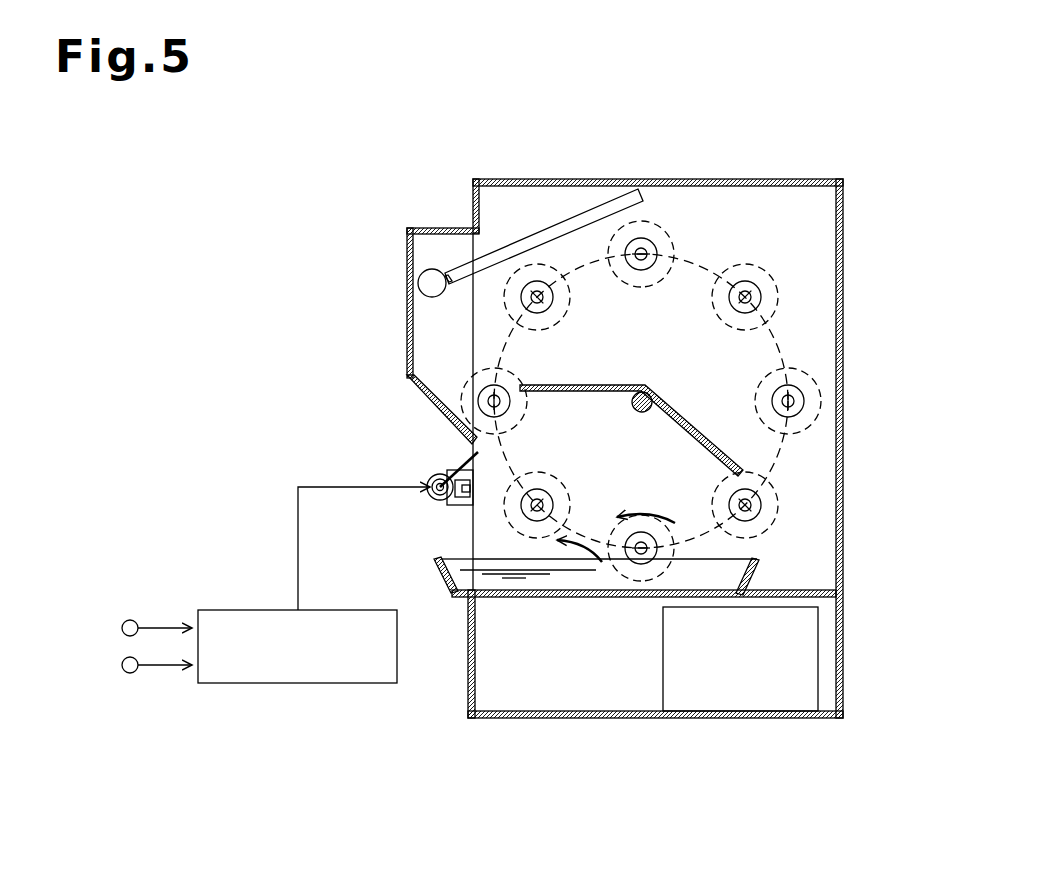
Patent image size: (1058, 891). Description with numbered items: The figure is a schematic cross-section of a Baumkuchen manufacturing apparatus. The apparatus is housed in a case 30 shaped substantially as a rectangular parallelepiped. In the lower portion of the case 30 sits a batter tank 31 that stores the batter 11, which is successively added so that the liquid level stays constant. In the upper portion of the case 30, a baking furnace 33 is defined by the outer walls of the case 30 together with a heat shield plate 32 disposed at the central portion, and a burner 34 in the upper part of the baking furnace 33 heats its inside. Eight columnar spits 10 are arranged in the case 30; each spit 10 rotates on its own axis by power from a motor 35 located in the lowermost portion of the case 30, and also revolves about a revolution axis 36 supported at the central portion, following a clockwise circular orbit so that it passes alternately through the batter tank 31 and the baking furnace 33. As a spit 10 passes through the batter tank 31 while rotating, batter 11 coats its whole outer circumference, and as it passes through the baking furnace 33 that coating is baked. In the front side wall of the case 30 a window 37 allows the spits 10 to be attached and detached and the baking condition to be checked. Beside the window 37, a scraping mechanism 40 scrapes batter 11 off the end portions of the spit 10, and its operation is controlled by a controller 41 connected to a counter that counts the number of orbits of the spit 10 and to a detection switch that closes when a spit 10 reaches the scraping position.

The spit 10 is at (552, 438).
The batter 11 is at (575, 586).
The case 30 is at (843, 456).
The batter tank 31 is at (440, 577).
The heat shield plate 32 is at (688, 425).
The baking furnace 33 is at (657, 349).
The burner 34 is at (548, 228).
The motor 35 is at (818, 655).
The revolution axis 36 is at (643, 413).
The window 37 is at (466, 515).
The scraping mechanism 40 is at (420, 467).
The controller 41 is at (247, 610).